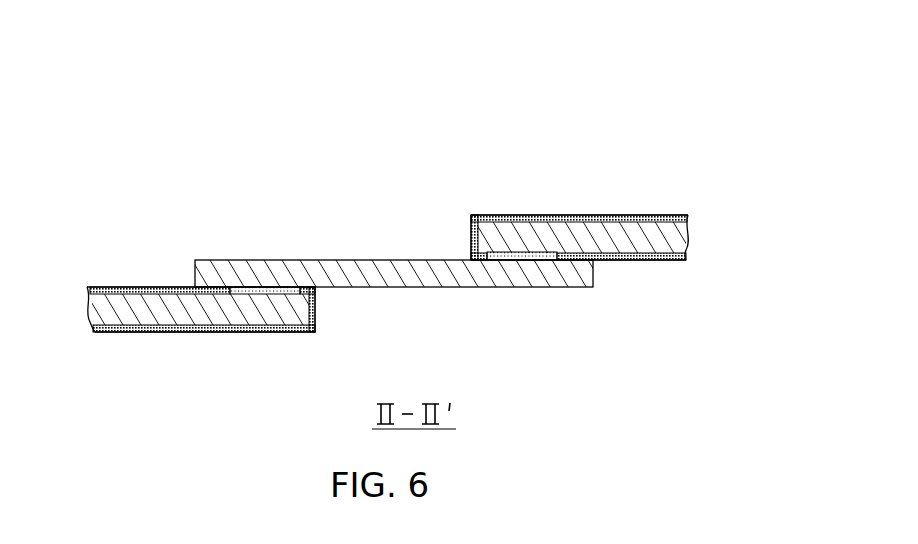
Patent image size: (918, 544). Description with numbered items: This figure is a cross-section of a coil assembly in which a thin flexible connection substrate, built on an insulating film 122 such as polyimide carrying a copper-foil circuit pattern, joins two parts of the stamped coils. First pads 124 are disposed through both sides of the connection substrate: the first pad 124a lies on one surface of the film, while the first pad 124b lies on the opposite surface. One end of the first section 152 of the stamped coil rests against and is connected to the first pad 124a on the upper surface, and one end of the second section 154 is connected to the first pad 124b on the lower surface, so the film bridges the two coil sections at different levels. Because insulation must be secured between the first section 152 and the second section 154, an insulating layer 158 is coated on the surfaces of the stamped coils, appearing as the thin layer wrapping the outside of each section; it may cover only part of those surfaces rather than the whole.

The insulating film 122 is at (392, 265).
The first pads 124 is at (393, 182).
The first pad 124a is at (522, 186).
The first pad 124b is at (287, 287).
The first section 152 is at (587, 227).
The second section 154 is at (281, 306).
The insulating layer 158 is at (650, 217).